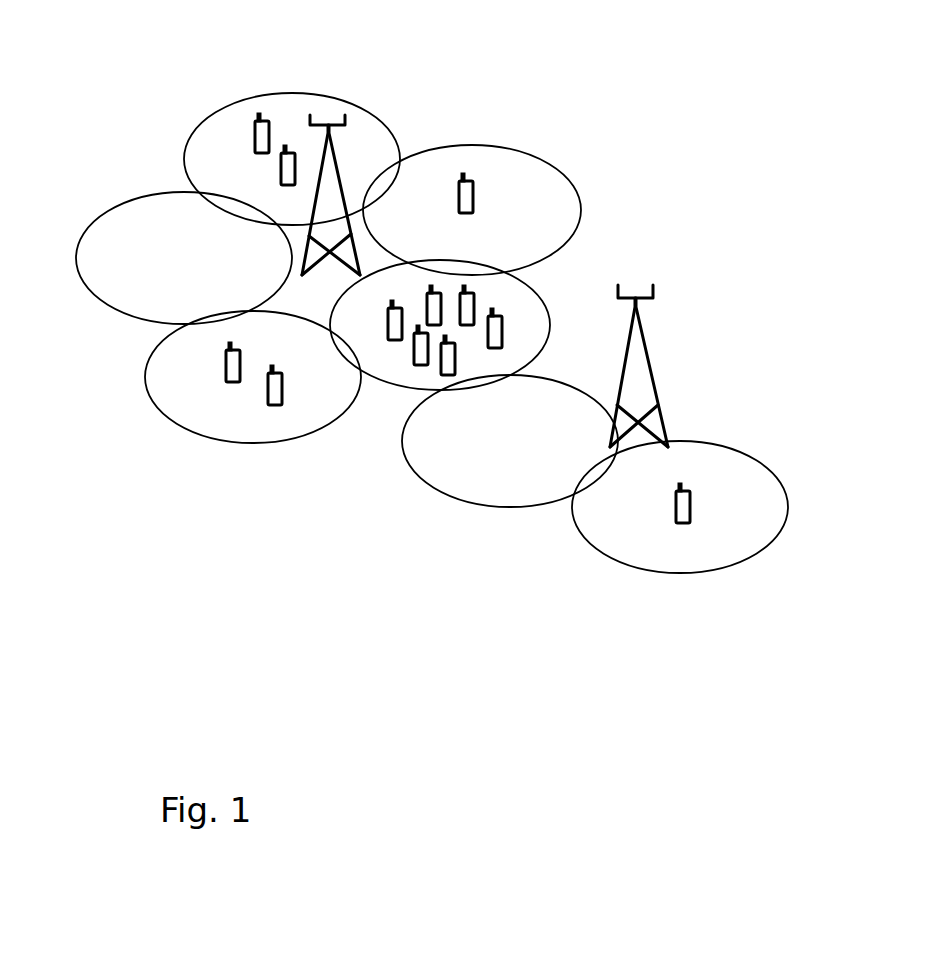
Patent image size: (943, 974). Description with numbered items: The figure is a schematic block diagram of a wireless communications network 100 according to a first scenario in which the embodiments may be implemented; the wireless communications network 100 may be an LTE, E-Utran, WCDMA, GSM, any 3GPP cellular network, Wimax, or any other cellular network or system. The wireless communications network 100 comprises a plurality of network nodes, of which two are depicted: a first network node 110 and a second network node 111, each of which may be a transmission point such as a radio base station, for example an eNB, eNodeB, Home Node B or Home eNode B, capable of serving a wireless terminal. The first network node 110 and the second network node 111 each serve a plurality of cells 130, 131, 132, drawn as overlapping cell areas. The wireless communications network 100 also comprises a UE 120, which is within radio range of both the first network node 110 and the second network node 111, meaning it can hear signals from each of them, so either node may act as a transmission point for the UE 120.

The wireless communications network 100 is at (564, 612).
The first network node 110 is at (345, 117).
The second network node 111 is at (657, 392).
The UE 120 is at (226, 370).
The cell 130 is at (131, 316).
The cell 131 is at (230, 104).
The cell 132 is at (402, 386).